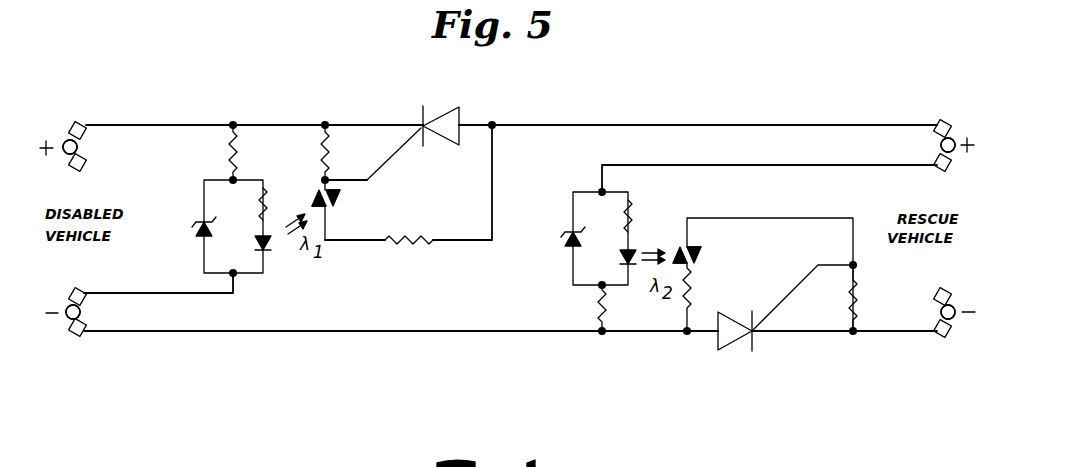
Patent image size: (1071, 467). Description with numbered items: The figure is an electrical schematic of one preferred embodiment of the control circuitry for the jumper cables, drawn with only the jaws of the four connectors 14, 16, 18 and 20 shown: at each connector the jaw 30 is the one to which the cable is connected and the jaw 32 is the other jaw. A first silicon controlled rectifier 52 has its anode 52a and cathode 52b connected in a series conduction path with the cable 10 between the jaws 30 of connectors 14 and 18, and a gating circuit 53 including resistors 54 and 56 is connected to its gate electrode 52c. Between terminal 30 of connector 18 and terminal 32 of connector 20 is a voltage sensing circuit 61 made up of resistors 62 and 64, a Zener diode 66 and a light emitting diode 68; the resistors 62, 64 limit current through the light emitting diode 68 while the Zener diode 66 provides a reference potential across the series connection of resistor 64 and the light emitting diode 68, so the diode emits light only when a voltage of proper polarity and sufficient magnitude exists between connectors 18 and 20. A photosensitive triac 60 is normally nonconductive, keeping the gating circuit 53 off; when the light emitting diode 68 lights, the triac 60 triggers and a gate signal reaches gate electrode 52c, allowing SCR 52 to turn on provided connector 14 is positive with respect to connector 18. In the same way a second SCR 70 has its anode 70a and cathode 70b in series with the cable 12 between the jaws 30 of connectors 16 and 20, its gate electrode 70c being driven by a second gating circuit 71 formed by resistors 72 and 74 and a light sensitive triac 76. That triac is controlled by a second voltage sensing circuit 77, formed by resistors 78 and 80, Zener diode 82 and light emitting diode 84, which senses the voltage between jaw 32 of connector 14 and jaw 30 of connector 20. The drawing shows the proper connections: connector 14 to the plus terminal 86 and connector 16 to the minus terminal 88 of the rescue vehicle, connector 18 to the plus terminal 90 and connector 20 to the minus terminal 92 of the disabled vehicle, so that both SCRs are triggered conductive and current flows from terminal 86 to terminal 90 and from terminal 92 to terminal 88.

The cable 10 is at (186, 124).
The cable 12 is at (275, 334).
The connector 14 is at (937, 121).
The connector 16 is at (933, 334).
The connector 18 is at (88, 123).
The connector 20 is at (93, 338).
The jaw 30 is at (62, 124).
The jaw 32 is at (78, 170).
The first silicon controlled rectifier 52 is at (437, 114).
The anode 52a is at (470, 122).
The cathode 52b is at (383, 120).
The gate electrode 52c is at (390, 170).
The gating circuit 53 is at (375, 258).
The resistor 54 is at (330, 151).
The resistor 56 is at (420, 235).
The photosensitive triac 60 is at (342, 201).
The voltage sensing circuit 61 is at (256, 161).
The resistor 62 is at (228, 152).
The resistor 64 is at (268, 196).
The Zener diode 66 is at (201, 238).
The light emitting diode 68 is at (270, 256).
The second silicon controlled rectifier 70 is at (727, 341).
The anode 70a is at (700, 334).
The cathode 70b is at (778, 342).
The gate electrode 70c is at (786, 296).
The second gating circuit 71 is at (785, 218).
The resistor 72 is at (858, 292).
The resistor 74 is at (692, 294).
The light sensitive triac 76 is at (703, 256).
The second voltage sensing circuit 77 is at (560, 215).
The resistor 78 is at (598, 306).
The resistor 80 is at (633, 210).
The Zener diode 82 is at (570, 236).
The light emitting diode 84 is at (632, 250).
The plus terminal 86 is at (940, 145).
The minus terminal 88 is at (940, 312).
The plus terminal 90 is at (82, 145).
The minus terminal 92 is at (70, 301).